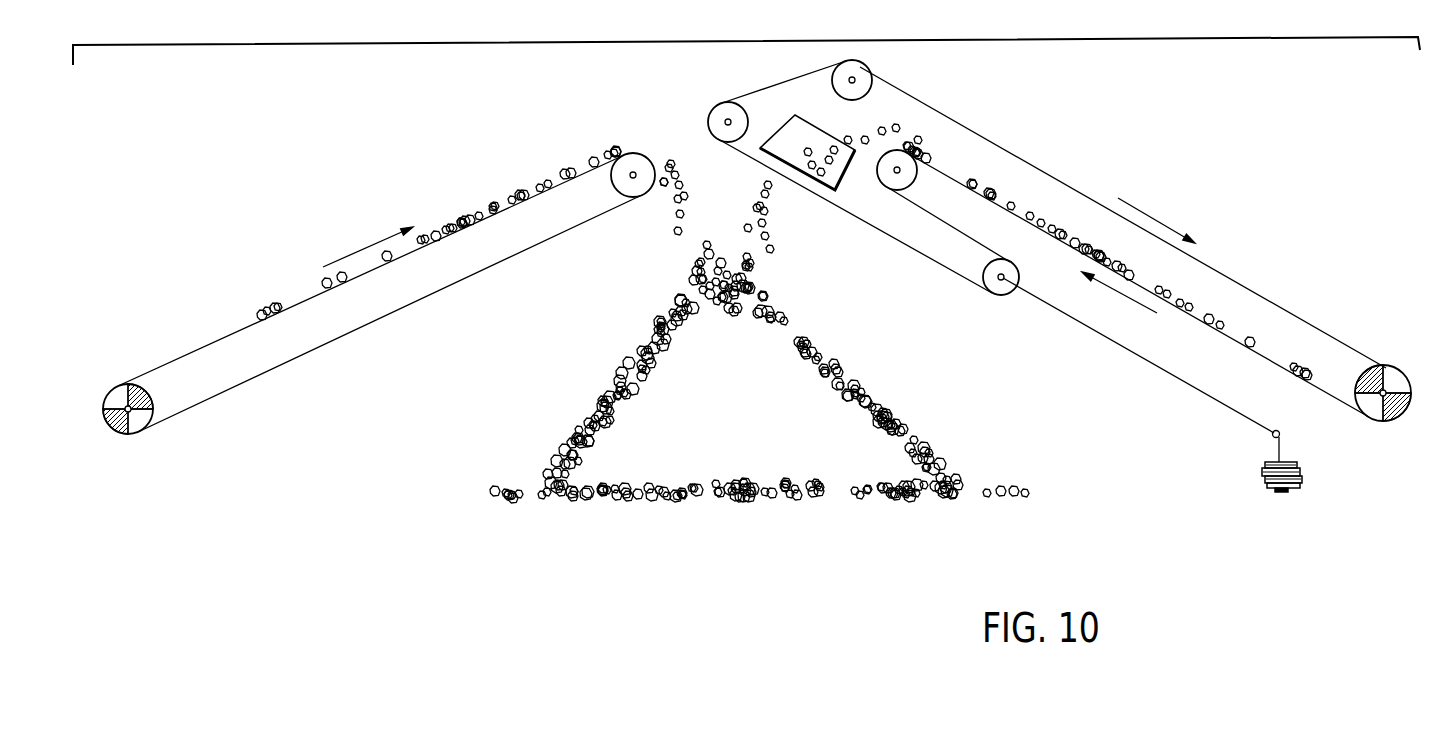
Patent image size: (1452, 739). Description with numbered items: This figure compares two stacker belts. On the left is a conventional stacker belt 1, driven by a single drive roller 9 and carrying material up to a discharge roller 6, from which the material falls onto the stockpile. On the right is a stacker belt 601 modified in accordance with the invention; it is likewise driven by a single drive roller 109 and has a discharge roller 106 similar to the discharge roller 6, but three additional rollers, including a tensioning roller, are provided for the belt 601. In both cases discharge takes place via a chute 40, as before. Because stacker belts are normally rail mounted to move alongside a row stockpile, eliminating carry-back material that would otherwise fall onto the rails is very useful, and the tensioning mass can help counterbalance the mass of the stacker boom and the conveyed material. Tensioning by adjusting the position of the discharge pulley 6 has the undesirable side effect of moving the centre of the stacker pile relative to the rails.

The belt 1 is at (240, 383).
The drive roller 9 is at (150, 423).
The discharge roller 6 is at (623, 182).
The chute 40 is at (850, 180).
The discharge roller 106 is at (910, 178).
The belt 601 is at (1245, 283).
The drive roller 109 is at (1395, 380).